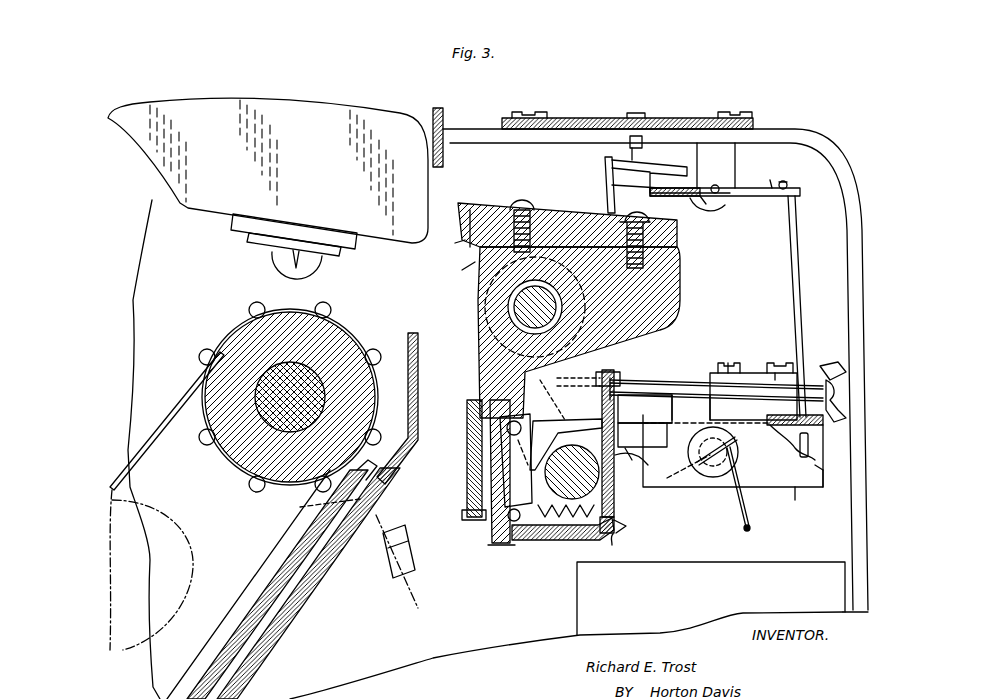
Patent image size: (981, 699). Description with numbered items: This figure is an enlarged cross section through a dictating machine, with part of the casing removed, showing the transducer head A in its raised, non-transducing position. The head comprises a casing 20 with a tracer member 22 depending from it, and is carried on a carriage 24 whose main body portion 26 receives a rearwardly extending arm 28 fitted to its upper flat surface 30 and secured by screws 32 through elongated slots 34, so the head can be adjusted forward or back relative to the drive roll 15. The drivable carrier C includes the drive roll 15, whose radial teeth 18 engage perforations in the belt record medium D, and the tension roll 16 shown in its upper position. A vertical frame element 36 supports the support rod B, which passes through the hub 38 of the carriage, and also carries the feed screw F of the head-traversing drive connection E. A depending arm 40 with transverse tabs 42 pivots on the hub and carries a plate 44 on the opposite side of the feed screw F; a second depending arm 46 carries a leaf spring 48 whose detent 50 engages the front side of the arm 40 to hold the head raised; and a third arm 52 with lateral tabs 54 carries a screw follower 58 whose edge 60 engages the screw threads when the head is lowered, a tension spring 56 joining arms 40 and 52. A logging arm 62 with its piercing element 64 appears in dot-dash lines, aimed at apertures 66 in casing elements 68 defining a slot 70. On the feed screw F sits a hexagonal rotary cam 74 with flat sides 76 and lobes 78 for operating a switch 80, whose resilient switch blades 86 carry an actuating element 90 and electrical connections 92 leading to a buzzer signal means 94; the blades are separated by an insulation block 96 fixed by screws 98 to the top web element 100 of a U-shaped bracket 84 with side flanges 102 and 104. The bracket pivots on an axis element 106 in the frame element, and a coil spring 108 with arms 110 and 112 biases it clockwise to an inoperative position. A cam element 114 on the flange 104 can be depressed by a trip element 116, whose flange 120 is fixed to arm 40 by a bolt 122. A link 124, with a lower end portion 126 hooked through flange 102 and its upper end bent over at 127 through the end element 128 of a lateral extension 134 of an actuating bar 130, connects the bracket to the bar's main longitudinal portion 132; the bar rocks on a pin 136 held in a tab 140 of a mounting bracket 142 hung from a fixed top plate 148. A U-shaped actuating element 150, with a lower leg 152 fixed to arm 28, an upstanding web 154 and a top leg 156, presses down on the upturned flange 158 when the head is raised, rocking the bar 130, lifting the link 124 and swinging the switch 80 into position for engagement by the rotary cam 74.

The drive roll 15 is at (248, 343).
The tension roll 16 is at (192, 578).
The teeth 18 is at (310, 305).
The casing 20 is at (329, 106).
The tracer member 22 is at (268, 252).
The carriage 24 is at (694, 309).
The main body portion 26 is at (677, 283).
The arm 28 is at (470, 206).
The upper flat surface 30 is at (560, 214).
The screws 32 is at (518, 206).
The slots 34 is at (457, 242).
The frame element 36 is at (795, 158).
The hub 38 is at (488, 323).
The depending arm 40 is at (614, 530).
The transverse tabs 42 is at (615, 374).
The plate 44 is at (642, 435).
The depending arm 46 is at (470, 479).
The leaf spring 48 is at (512, 550).
The detent 50 is at (611, 548).
The third arm 52 is at (452, 369).
The lateral tabs 54 is at (468, 265).
The tension spring 56 is at (566, 540).
The screw follower 58 is at (488, 458).
The edge 60 is at (521, 452).
The logging arm 62 is at (397, 566).
The piercing element 64 is at (372, 538).
The apertures 66 is at (312, 510).
The casing elements 68 is at (237, 665).
The slot 70 is at (262, 623).
The rotary cam 74 is at (620, 478).
The flat sides 76 is at (628, 495).
The lobes 78 is at (640, 484).
The switch 80 is at (757, 366).
The bracket 84 is at (793, 500).
The switch blades 86 is at (697, 393).
The actuating element 90 is at (570, 392).
The electrical connections 92 is at (830, 368).
The signal means 94 is at (802, 595).
The block of insulation material 96 is at (768, 372).
The screws 98 is at (730, 362).
The top web element 100 is at (790, 428).
The side flange 102 is at (818, 447).
The side flange 104 is at (823, 487).
The axis element 106 is at (716, 478).
The spring 108 is at (736, 516).
The arm 110 is at (681, 466).
The arm 112 is at (749, 528).
The cam element 114 is at (733, 451).
The trip element 116 is at (672, 410).
The flange 120 is at (645, 409).
The bolt 122 is at (648, 390).
The link 124 is at (800, 250).
The lower end portion 126 is at (798, 456).
The bent-over end 127 is at (790, 185).
The end element 128 is at (770, 180).
The actuating bar 130 is at (709, 206).
The main longitudinal portion 132 is at (690, 207).
The lateral extension 134 is at (751, 197).
The pin 136 is at (716, 186).
The tab 140 is at (712, 150).
The mounting bracket 142 is at (646, 134).
The top plate 148 is at (586, 116).
The actuating element 150 is at (601, 175).
The lower leg 152 is at (635, 210).
The web 154 is at (608, 187).
The top leg 156 is at (630, 148).
The upturned flange 158 is at (664, 178).
The transducer head A is at (266, 89).
The support rod B is at (503, 300).
The drivable carrier C is at (189, 406).
The record medium D is at (135, 440).
The head-traversing drive connection E is at (493, 527).
The feed screw F is at (566, 490).